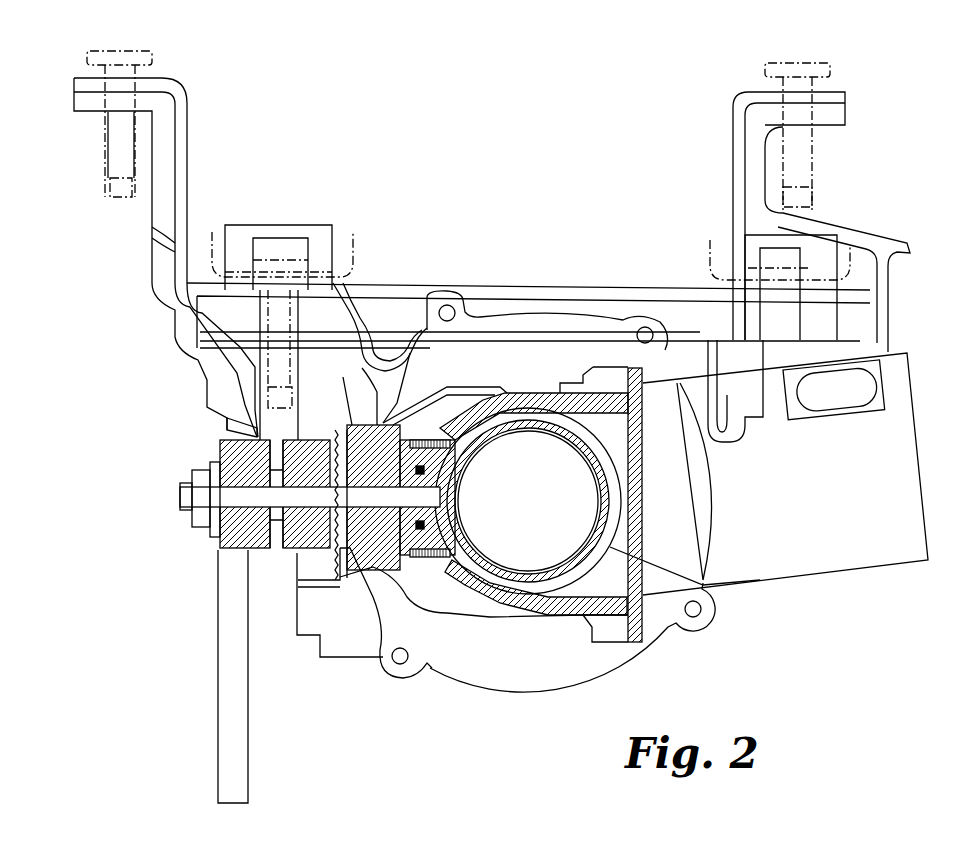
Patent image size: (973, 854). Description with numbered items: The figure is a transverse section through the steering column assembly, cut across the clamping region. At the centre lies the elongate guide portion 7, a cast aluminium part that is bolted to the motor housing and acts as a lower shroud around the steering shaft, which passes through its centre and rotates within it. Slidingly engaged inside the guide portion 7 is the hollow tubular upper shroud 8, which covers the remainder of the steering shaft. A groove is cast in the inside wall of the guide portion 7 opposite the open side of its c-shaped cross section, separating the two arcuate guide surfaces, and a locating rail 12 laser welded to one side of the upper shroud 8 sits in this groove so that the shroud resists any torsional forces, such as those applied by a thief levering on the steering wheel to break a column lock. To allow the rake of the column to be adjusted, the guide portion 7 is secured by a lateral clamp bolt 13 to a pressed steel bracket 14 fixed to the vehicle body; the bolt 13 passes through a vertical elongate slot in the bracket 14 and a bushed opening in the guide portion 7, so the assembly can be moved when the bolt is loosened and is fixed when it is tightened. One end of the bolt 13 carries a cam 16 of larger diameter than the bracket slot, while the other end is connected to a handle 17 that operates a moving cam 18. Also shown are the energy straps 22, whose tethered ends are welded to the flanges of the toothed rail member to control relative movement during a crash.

The guide portion 7 is at (510, 400).
The upper shroud 8 is at (548, 575).
The locating rail 12 is at (425, 540).
The clamp bolt 13 is at (210, 527).
The bracket 14 is at (160, 224).
The cam 16 is at (286, 553).
The handle 17 is at (222, 762).
The moving cam 18 is at (227, 429).
The energy straps 22 is at (455, 458).